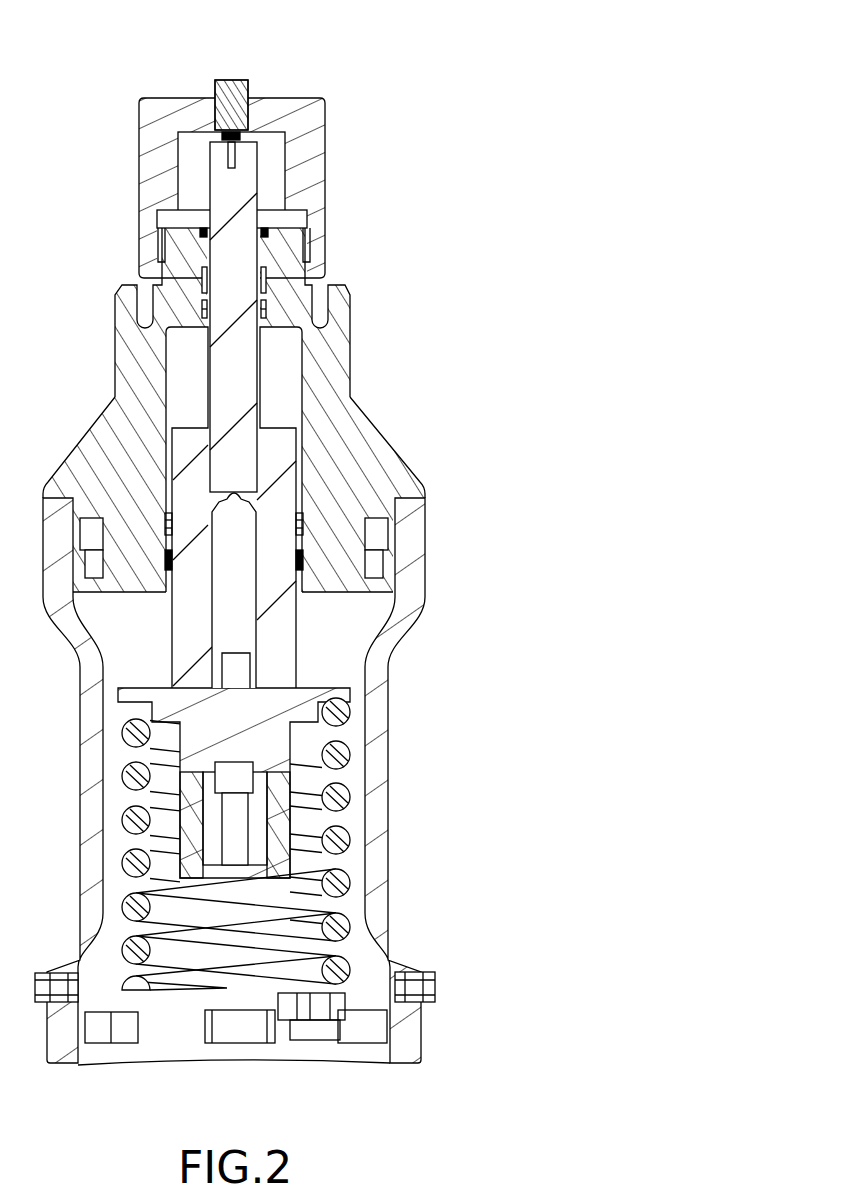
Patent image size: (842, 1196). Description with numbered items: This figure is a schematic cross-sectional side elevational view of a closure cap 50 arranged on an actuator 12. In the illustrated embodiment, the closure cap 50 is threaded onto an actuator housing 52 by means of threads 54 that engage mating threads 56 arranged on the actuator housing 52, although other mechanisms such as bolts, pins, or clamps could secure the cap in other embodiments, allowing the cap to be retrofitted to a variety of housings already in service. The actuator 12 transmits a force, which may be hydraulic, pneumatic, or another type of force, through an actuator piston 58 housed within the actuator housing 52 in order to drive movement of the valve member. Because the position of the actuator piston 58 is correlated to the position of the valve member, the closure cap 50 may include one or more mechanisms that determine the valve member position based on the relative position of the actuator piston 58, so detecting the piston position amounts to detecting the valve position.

The actuator 12 is at (420, 361).
The closure cap 50 is at (366, 76).
The actuator housing 52 is at (350, 313).
The threads 54 is at (304, 270).
The mating threads 56 is at (163, 276).
The actuator piston 58 is at (238, 178).